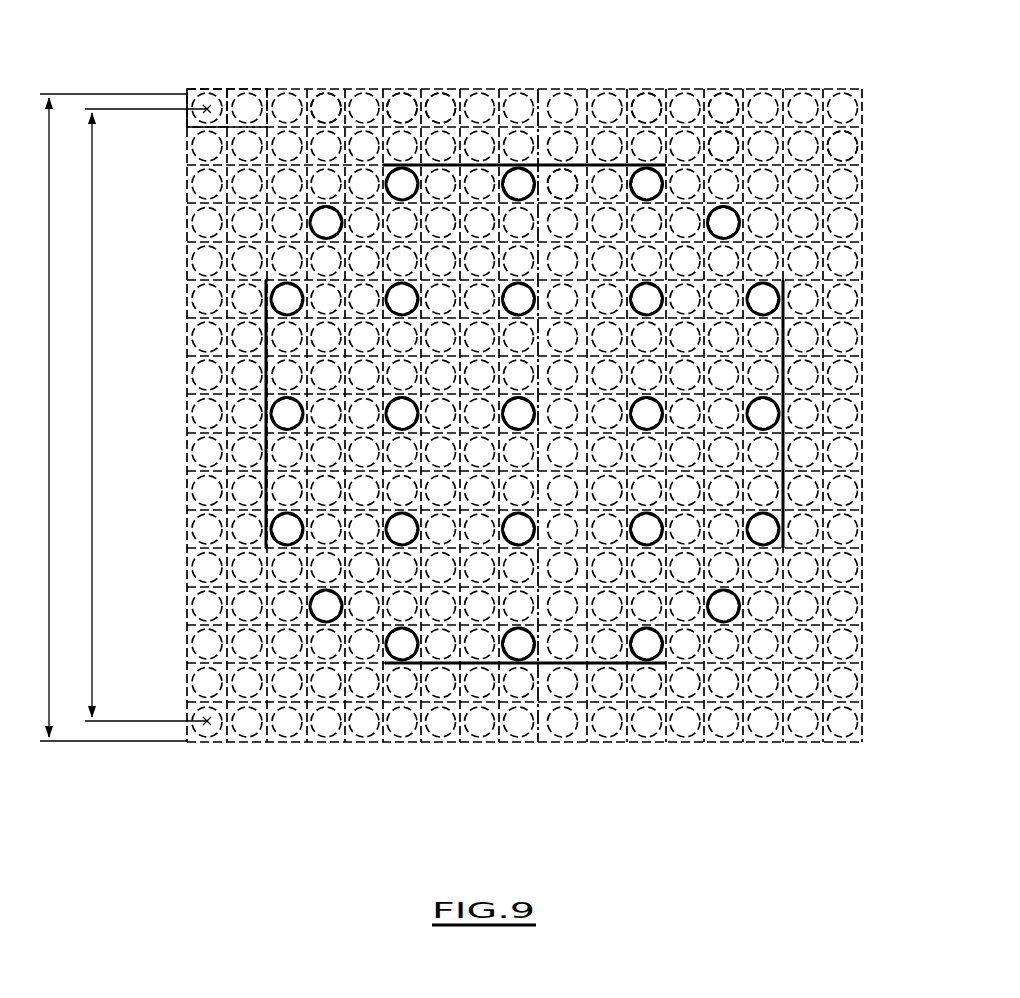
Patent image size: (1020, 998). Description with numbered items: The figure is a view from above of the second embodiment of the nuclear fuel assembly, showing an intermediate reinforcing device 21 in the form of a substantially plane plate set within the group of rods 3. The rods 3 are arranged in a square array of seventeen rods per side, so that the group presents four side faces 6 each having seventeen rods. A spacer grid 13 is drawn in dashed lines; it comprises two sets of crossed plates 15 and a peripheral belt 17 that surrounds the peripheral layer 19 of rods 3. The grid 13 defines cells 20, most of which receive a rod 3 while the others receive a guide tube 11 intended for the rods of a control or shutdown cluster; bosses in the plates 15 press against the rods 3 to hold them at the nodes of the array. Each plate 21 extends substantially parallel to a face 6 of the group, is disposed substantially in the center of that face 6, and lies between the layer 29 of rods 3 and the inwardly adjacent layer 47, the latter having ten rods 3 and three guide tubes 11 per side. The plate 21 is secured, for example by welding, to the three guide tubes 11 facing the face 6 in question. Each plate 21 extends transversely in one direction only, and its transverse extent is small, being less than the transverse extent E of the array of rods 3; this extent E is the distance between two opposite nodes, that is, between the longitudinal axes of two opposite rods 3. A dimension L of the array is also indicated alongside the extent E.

The rod 3 is at (280, 88).
The side face 6 is at (301, 80).
The guide tube 11 is at (425, 164).
The spacer grid 13 is at (344, 80).
The crossed plates 15 is at (396, 88).
The peripheral belt 17 is at (654, 88).
The peripheral layer 19 is at (707, 83).
The cell 20 is at (187, 130).
The intermediate reinforcing device 21 is at (492, 154).
The layer of rods 29 is at (730, 136).
The inwardly adjacent layer 47 is at (566, 185).
The panel length L is at (47, 393).
The transverse extent E is at (91, 393).